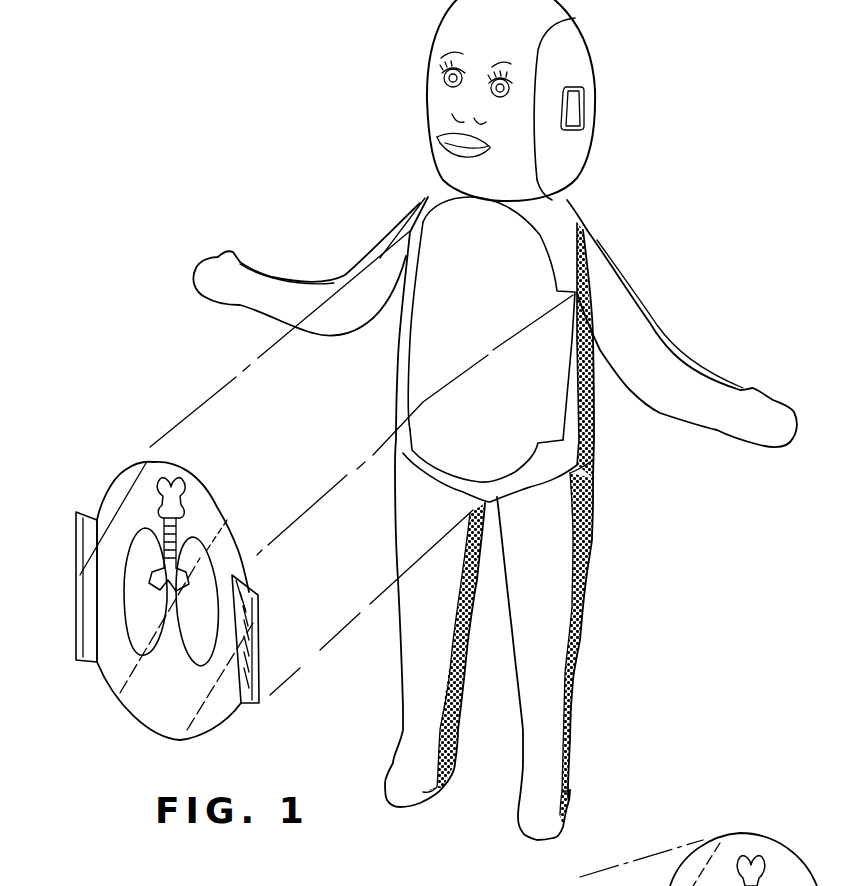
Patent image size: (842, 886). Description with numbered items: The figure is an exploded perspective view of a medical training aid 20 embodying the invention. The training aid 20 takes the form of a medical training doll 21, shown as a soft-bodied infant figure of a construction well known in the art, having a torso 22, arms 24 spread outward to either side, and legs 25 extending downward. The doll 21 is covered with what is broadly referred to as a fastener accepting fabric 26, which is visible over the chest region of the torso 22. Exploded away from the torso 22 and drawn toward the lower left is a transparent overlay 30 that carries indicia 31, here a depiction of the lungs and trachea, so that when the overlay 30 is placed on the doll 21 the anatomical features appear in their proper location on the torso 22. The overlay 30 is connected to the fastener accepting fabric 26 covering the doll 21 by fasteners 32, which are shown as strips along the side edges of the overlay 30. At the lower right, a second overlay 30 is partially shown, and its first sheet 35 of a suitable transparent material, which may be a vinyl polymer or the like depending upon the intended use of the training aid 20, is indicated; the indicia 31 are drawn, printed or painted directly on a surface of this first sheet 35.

The medical training aid 20 is at (318, 131).
The medical training doll 21 is at (598, 480).
The torso 22 is at (403, 348).
The arms 24 is at (273, 280).
The legs 25 is at (420, 690).
The fastener accepting fabric 26 is at (495, 429).
The transparent overlay 30 is at (148, 730).
The indicia 31 is at (135, 655).
The fasteners 32 is at (87, 602).
The first sheet 35 is at (797, 860).